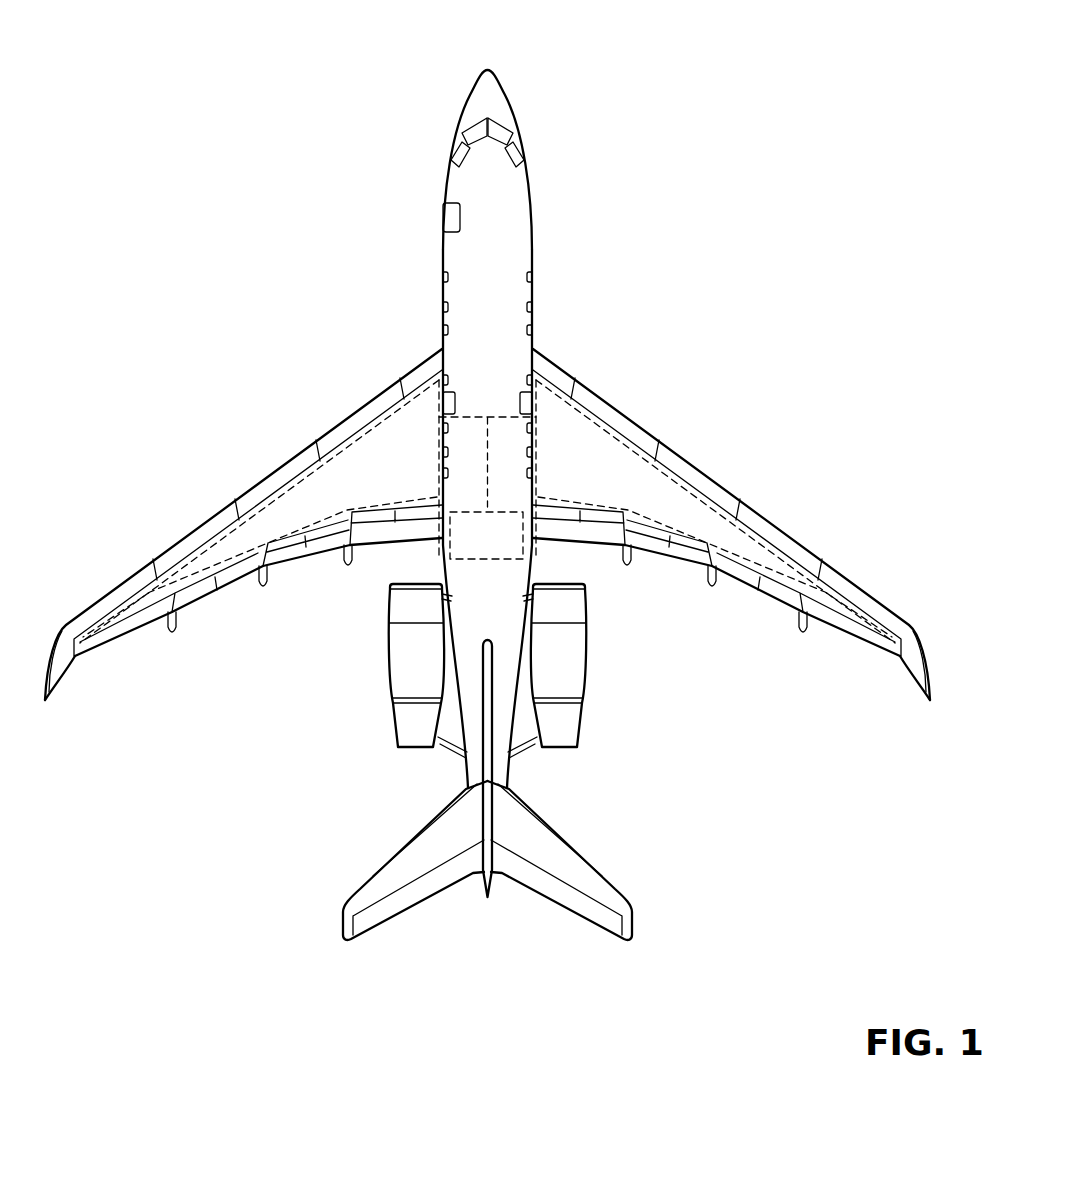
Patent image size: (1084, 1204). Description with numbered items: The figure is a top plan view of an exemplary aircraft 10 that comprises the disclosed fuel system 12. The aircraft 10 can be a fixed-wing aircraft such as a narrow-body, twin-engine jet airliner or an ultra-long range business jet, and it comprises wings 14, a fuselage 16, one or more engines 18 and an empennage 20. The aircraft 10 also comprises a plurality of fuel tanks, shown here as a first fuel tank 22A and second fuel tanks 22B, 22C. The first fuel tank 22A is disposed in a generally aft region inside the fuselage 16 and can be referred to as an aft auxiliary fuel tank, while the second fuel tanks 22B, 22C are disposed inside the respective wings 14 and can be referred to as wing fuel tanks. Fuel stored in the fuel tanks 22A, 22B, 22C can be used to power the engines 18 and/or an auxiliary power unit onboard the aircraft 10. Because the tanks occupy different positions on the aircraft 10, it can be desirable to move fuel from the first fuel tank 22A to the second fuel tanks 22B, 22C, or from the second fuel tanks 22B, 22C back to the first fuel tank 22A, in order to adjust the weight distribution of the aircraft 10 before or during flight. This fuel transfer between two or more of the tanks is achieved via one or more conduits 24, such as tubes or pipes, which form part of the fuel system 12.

The aircraft 10 is at (712, 78).
The fuel system 12 is at (463, 405).
The wings 14 is at (192, 440).
The fuselage 16 is at (508, 317).
The engines 18 is at (387, 670).
The empennage 20 is at (488, 918).
The first fuel tank 22A is at (517, 549).
The second fuel tank 22B is at (415, 485).
The second fuel tank 22C is at (619, 485).
The conduits 24 is at (502, 415).